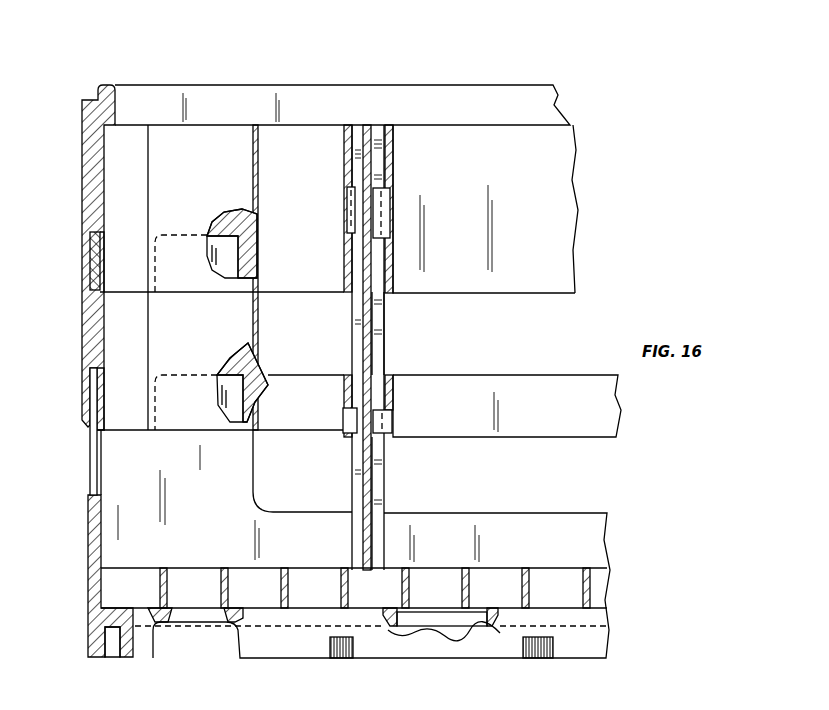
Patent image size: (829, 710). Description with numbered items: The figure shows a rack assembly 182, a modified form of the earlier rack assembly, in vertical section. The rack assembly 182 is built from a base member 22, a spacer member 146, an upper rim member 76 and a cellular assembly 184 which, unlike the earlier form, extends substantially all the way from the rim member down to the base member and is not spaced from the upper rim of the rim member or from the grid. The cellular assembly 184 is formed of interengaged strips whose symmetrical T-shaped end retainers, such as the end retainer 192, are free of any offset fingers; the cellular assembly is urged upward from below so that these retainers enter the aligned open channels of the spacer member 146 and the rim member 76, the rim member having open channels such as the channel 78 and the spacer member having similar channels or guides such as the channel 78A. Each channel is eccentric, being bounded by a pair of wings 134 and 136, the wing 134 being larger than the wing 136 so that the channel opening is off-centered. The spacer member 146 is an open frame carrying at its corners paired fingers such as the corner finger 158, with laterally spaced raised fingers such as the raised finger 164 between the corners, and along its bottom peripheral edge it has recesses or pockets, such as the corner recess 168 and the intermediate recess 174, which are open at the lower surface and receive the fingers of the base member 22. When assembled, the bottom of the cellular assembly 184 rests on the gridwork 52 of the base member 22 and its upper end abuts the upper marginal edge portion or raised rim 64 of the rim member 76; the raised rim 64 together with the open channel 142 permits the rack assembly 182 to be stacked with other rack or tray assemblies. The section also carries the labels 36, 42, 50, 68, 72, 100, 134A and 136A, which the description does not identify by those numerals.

The base member 22 is at (618, 617).
The hatched member 36 is at (250, 363).
The rod 42 is at (98, 459).
The block 50 is at (447, 608).
The gridwork 52 is at (460, 540).
The raised rim 64 is at (183, 86).
The recess 68 is at (238, 269).
The wall portion 72 is at (102, 270).
The rim member 76 is at (358, 65).
The open channel 78 is at (397, 207).
The open channel 78A is at (395, 407).
The center rod 100 is at (364, 310).
The wing 134 is at (393, 223).
The block 134A is at (393, 421).
The wing 136 is at (346, 202).
The block 136A is at (343, 418).
The open channel 142 is at (112, 652).
The spacer member 146 is at (604, 345).
The corner finger 158 is at (243, 226).
The raised finger 164 is at (92, 250).
The corner recess 168 is at (250, 405).
The recess 174 is at (98, 393).
The rack assembly 182 is at (560, 52).
The cellular assembly 184 is at (389, 345).
The end retainer 192 is at (380, 478).